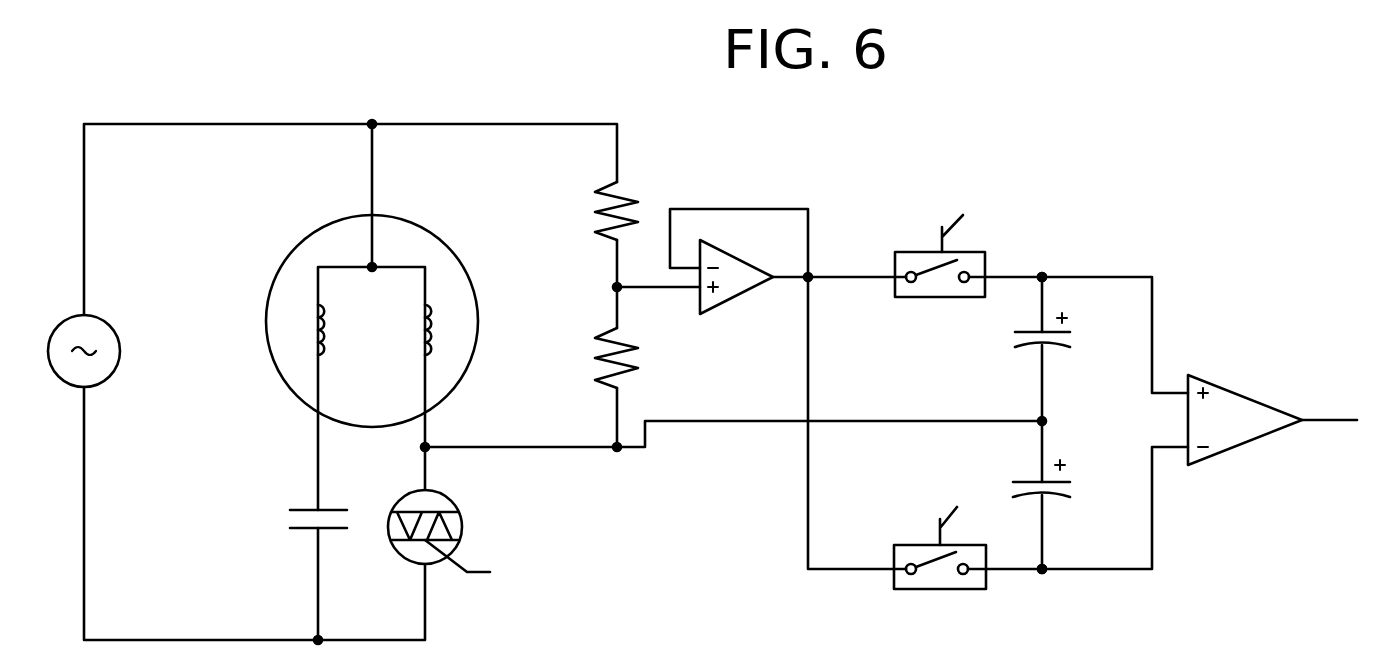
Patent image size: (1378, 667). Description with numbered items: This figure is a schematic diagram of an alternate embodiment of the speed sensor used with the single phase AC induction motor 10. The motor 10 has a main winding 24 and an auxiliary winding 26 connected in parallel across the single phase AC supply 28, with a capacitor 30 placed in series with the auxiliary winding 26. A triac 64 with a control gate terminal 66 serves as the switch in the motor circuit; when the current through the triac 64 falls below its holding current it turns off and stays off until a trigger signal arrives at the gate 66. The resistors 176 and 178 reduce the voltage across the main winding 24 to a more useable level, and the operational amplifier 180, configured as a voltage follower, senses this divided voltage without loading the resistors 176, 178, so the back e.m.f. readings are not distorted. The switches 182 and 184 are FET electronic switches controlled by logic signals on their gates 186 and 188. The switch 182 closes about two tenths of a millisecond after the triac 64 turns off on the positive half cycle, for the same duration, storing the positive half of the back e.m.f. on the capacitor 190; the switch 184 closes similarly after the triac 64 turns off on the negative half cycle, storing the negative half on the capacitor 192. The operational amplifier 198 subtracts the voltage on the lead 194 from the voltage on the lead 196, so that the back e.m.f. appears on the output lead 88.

The single phase AC induction motor 10 is at (298, 243).
The main winding 24 is at (437, 337).
The auxiliary winding 26 is at (330, 337).
The single phase AC supply 28 is at (112, 323).
The capacitor 30 is at (308, 528).
The triac 64 is at (403, 493).
The control gate terminal 66 is at (458, 558).
The lead 88 is at (1332, 418).
The resistor 176 is at (635, 210).
The resistor 178 is at (635, 362).
The operational amplifier 180 is at (732, 297).
The switch 182 is at (945, 298).
The switch 184 is at (913, 543).
The gate 186 is at (966, 220).
The gate 188 is at (961, 513).
The capacitor 190 is at (1072, 335).
The capacitor 192 is at (1070, 488).
The lead 194 is at (1045, 575).
The lead 196 is at (1045, 272).
The operational amplifier 198 is at (1230, 450).